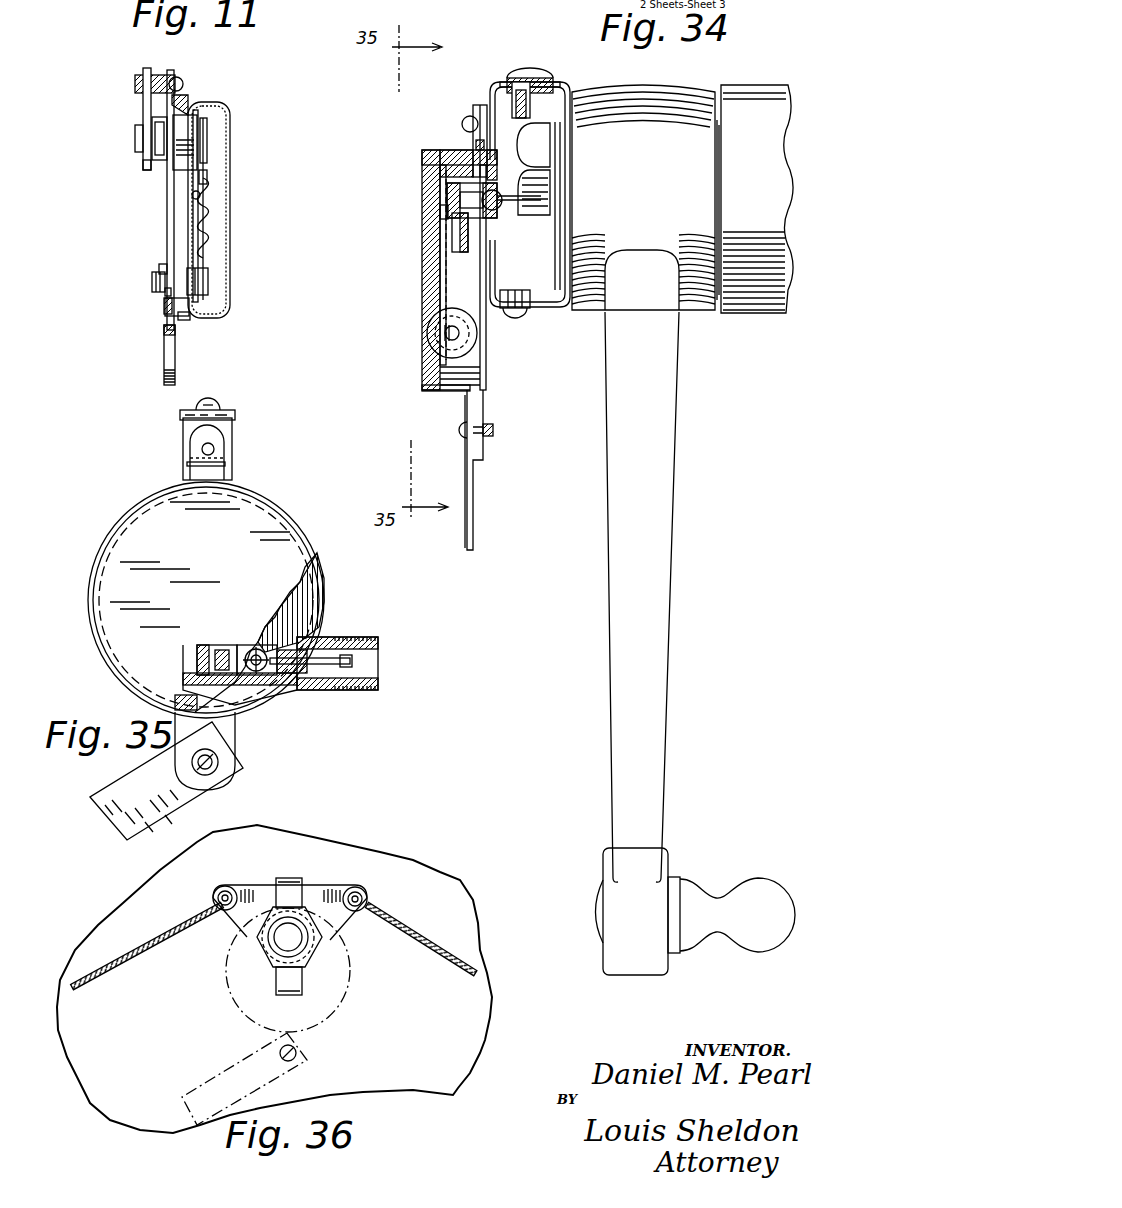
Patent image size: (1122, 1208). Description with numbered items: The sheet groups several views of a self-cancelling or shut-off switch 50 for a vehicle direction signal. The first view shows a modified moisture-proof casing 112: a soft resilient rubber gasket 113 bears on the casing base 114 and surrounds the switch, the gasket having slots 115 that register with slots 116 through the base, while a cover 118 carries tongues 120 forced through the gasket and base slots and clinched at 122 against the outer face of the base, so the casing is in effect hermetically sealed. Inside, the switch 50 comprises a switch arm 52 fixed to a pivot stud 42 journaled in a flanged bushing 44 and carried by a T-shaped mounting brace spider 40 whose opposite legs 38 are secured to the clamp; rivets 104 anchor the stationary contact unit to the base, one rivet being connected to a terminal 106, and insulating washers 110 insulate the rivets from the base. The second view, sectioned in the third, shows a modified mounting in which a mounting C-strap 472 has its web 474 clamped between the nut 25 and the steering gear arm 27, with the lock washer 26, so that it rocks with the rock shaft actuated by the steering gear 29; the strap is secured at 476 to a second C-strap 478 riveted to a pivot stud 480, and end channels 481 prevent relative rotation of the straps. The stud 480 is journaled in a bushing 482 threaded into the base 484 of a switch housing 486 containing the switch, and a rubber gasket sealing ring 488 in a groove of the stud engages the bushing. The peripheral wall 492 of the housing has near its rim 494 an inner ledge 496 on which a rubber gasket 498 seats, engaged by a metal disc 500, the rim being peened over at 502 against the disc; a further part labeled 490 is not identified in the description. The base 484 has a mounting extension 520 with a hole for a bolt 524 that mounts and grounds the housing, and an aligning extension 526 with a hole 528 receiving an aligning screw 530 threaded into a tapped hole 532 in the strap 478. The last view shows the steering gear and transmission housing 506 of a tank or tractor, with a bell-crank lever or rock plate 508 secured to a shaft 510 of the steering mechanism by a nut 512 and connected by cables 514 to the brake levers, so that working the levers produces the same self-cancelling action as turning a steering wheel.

In FIG. 34, the nut 25 is at (540, 140).
In FIG. 34, the lock washer 26 is at (548, 152).
In FIG. 34, the steering gear arm 27 is at (683, 412).
In FIG. 34, the steering gear 29 is at (745, 85).
In FIG. 11, the legs 38 is at (152, 118).
In FIG. 11, the T-shaped mounting brace spider 40 is at (150, 66).
In FIG. 11, the pivot stud 42 is at (135, 140).
In FIG. 11, the flanged bushing 44 is at (151, 170).
In FIG. 11, the self canceling or shut-off switch 50 is at (211, 262).
In FIG. 34, the self canceling or shut-off switch 50 is at (440, 213).
In FIG. 35, the self canceling or shut-off switch 50 is at (262, 640).
In FIG. 11, the switch arm 52 is at (207, 177).
In FIG. 11, the rivets 104 is at (152, 281).
In FIG. 11, the terminal 106 is at (142, 308).
In FIG. 11, the insulating washers 110 is at (162, 265).
In FIG. 11, the modified casing 112 is at (229, 103).
In FIG. 11, the rubber gasket 113 is at (184, 96).
In FIG. 11, the casing base 114 is at (167, 194).
In FIG. 11, the gasket slots 115 is at (186, 321).
In FIG. 11, the base slots 116 is at (165, 334).
In FIG. 11, the cover 118 is at (229, 207).
In FIG. 11, the tongues 120 is at (190, 310).
In FIG. 11, the clinched portion 122 is at (165, 309).
In FIG. 34, the mounting C-strap 472 is at (567, 88).
In FIG. 36, the mounting C-strap 472 is at (325, 969).
In FIG. 34, the web 474 is at (556, 182).
In FIG. 34, the securing point 476 is at (520, 74).
In FIG. 35, the securing point 476 is at (218, 404).
In FIG. 34, the second C-strap 478 is at (487, 104).
In FIG. 35, the second C-strap 478 is at (183, 432).
In FIG. 34, the pivot stud 480 is at (502, 210).
In FIG. 34, the end channels 481 is at (548, 98).
In FIG. 35, the end channels 481 is at (236, 420).
In FIG. 34, the bushing 482 is at (452, 224).
In FIG. 34, the base 484 is at (478, 357).
In FIG. 35, the base 484 is at (246, 696).
In FIG. 34, the switch housing 486 is at (440, 395).
In FIG. 35, the switch housing 486 is at (271, 496).
In FIG. 34, the rubber gasket sealing ring 488 is at (500, 198).
In FIG. 35, the ring wall 490 is at (324, 602).
In FIG. 34, the peripheral wall 492 is at (430, 388).
In FIG. 35, the peripheral wall 492 is at (126, 510).
In FIG. 34, the rim 494 is at (424, 152).
In FIG. 35, the rim 494 is at (326, 618).
In FIG. 34, the inner ledge 496 is at (452, 150).
In FIG. 34, the rubber gasket 498 is at (423, 176).
In FIG. 35, the rubber gasket 498 is at (320, 570).
In FIG. 34, the disc 500 is at (447, 200).
In FIG. 35, the disc 500 is at (272, 522).
In FIG. 34, the peened-over portion 502 is at (422, 163).
In FIG. 35, the peened-over portion 502 is at (143, 508).
In FIG. 36, the steering gear and transmission housing 506 is at (327, 846).
In FIG. 36, the bell-crank lever or rock plate 508 is at (320, 893).
In FIG. 36, the shaft 510 is at (322, 945).
In FIG. 36, the nut 512 is at (262, 950).
In FIG. 36, the cables 514 is at (428, 952).
In FIG. 34, the mounting extension 520 is at (484, 404).
In FIG. 35, the mounting extension 520 is at (236, 742).
In FIG. 34, the bolt 524 is at (494, 430).
In FIG. 35, the bolt 524 is at (218, 762).
In FIG. 34, the aligning extension 526 is at (484, 112).
In FIG. 35, the aligning extension 526 is at (187, 468).
In FIG. 35, the hole 528 is at (202, 449).
In FIG. 34, the aligning screw 530 is at (464, 118).
In FIG. 34, the tapped hole 532 is at (500, 108).